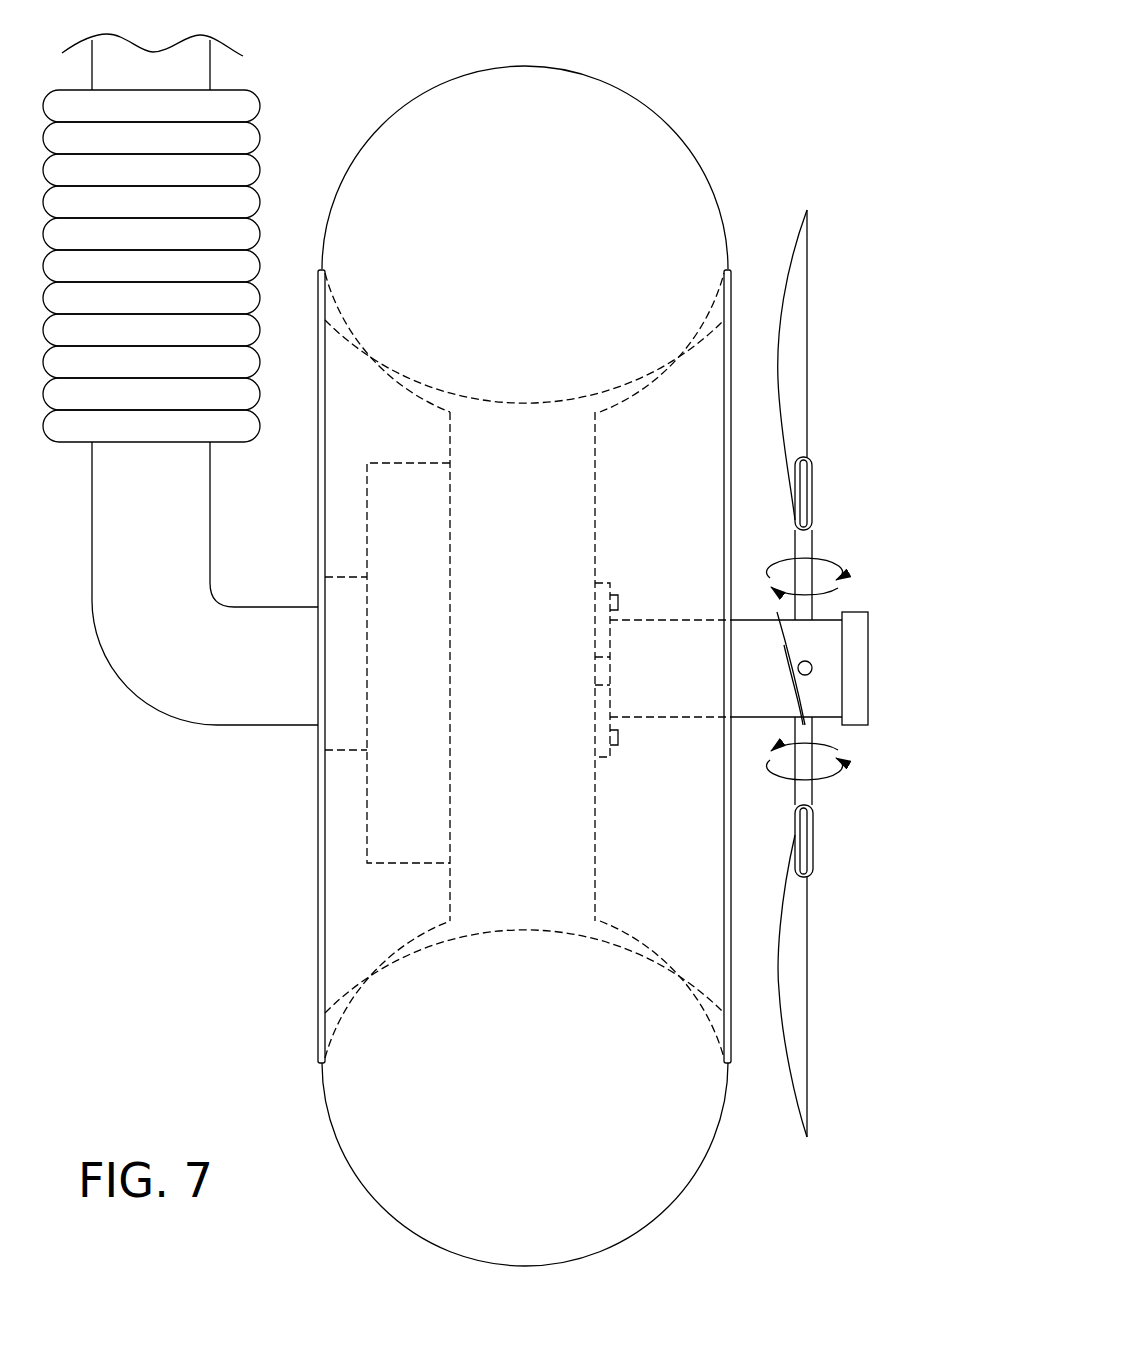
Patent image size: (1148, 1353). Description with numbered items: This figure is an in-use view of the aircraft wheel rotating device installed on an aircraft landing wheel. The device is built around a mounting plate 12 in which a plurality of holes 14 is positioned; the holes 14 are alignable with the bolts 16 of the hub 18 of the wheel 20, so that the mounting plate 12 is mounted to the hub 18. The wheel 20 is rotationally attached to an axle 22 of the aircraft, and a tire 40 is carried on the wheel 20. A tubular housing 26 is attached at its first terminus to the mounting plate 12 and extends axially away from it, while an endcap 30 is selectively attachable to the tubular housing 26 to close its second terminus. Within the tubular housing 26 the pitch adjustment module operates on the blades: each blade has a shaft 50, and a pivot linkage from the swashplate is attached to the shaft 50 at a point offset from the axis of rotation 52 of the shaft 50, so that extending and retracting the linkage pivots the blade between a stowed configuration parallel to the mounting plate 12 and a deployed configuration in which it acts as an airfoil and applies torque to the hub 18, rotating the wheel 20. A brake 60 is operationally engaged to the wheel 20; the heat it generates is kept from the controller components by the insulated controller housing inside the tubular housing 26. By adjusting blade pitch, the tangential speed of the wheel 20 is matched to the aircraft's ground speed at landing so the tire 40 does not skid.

The mounting plate 12 is at (601, 698).
The holes 14 is at (823, 392).
The bolts 16 is at (609, 606).
The hub 18 is at (489, 721).
The wheel 20 is at (749, 215).
The axle 22 is at (262, 672).
The tubular housing 26 is at (826, 692).
The endcap 30 is at (871, 620).
The tires 40 is at (624, 184).
The shaft 50 is at (819, 592).
The axis of rotation 52 is at (801, 577).
The brake 60 is at (392, 729).